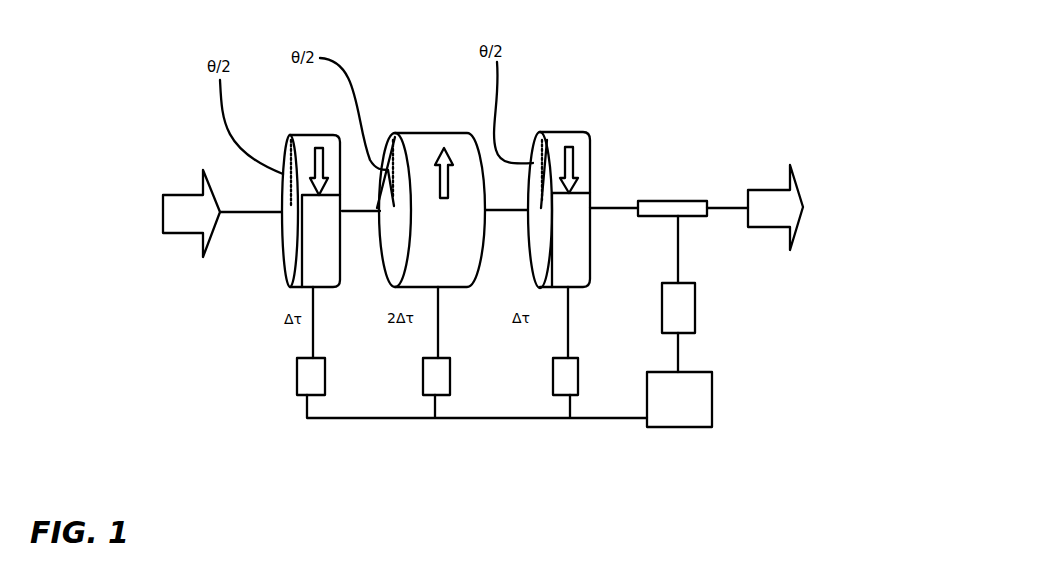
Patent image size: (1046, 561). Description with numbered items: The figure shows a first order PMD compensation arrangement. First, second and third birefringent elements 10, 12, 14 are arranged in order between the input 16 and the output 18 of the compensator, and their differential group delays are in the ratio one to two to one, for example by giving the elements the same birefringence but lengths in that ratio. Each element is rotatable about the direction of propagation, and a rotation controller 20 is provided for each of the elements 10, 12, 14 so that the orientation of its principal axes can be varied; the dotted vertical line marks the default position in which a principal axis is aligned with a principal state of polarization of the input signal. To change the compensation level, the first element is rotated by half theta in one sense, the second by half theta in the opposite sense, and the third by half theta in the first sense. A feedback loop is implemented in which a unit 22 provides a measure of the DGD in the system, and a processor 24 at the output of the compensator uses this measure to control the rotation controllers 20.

The first birefringent element 10 is at (312, 135).
The second birefringent element 12 is at (436, 133).
The third birefringent element 14 is at (565, 132).
The input 16 is at (160, 213).
The output 18 is at (723, 208).
The rotation controller 20 is at (297, 380).
The unit 22 is at (695, 297).
The processor 24 is at (712, 393).